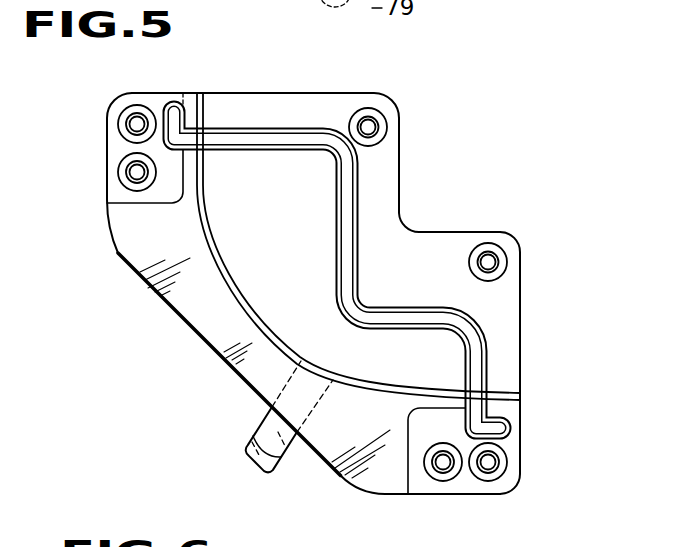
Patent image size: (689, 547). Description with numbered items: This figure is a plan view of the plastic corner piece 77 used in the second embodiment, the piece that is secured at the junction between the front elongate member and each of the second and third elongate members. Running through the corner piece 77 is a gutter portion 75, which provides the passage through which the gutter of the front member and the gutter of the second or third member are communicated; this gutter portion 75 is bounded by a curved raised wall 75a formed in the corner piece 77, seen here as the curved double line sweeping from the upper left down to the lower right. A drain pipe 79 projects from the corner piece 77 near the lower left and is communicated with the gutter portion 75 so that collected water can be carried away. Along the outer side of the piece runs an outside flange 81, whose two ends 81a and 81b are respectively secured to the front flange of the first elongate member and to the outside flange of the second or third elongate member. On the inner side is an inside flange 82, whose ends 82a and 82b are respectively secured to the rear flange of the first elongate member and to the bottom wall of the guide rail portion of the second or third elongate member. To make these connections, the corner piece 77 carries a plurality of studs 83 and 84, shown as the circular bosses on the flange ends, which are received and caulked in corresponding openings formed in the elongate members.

The gutter portion 75 is at (250, 285).
The curved raised wall 75a is at (193, 248).
The plastic corner piece 77 is at (238, 375).
The drain pipe 79 is at (278, 468).
The outside flange 81 is at (117, 253).
The end of outside flange 81a is at (110, 118).
The end of outside flange 81b is at (503, 494).
The inside flange 82 is at (402, 158).
The end of inside flange 82a is at (272, 93).
The end of inside flange 82b is at (522, 298).
The studs 83 is at (135, 116).
The studs 84 is at (370, 110).